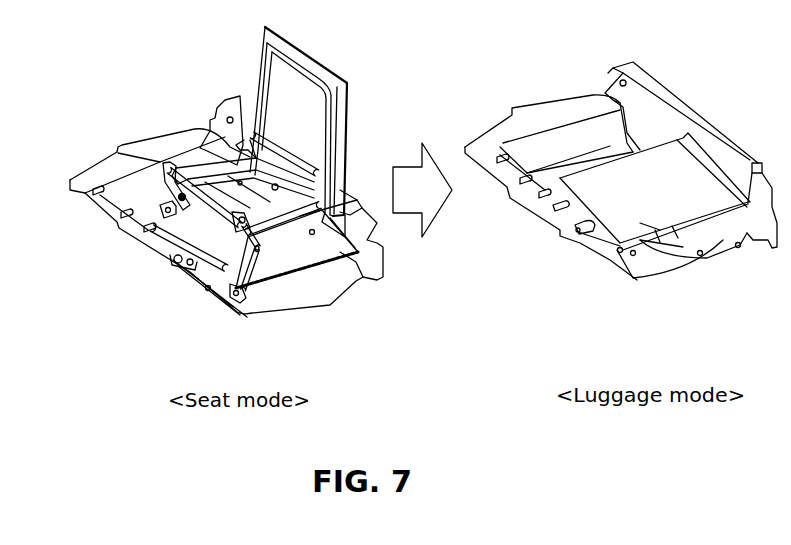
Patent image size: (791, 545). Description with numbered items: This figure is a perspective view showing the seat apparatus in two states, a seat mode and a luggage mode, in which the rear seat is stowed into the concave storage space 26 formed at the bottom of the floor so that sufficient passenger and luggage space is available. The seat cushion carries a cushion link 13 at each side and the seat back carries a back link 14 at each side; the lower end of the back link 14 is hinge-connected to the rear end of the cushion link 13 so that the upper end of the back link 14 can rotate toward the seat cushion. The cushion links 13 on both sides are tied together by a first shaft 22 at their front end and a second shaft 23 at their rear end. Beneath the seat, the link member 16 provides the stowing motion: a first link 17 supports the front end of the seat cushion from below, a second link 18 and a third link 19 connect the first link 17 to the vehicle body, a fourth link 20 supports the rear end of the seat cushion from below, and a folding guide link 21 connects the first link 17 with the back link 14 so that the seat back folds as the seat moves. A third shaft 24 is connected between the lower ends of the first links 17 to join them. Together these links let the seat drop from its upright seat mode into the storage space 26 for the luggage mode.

The cushion link 13 is at (213, 163).
The back link 14 is at (333, 123).
The link member 16 is at (250, 135).
The first link 17 is at (207, 290).
The second link 18 is at (167, 210).
The third link 19 is at (233, 290).
The fourth link 20 is at (363, 277).
The folding guide link 21 is at (285, 222).
The first shaft 22 is at (197, 187).
The second shaft 23 is at (282, 198).
The third shaft 24 is at (177, 258).
The storage space 26 is at (308, 252).